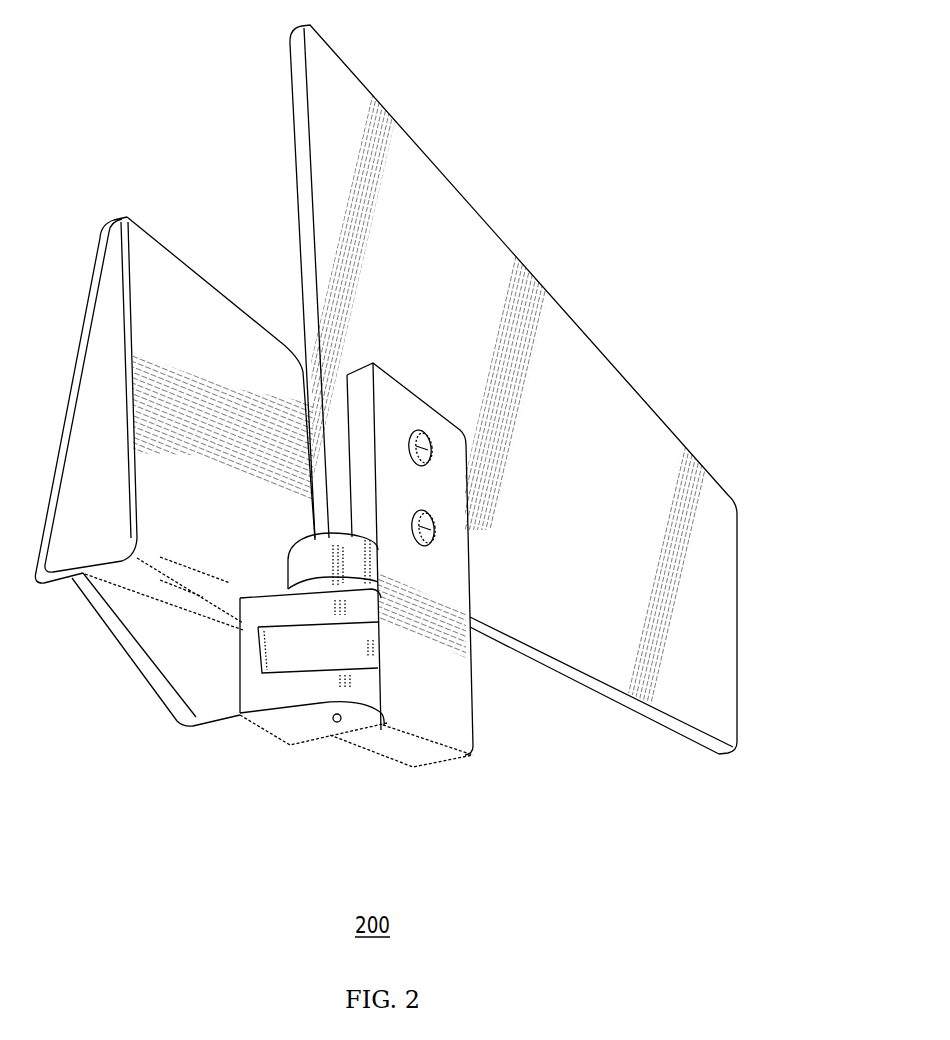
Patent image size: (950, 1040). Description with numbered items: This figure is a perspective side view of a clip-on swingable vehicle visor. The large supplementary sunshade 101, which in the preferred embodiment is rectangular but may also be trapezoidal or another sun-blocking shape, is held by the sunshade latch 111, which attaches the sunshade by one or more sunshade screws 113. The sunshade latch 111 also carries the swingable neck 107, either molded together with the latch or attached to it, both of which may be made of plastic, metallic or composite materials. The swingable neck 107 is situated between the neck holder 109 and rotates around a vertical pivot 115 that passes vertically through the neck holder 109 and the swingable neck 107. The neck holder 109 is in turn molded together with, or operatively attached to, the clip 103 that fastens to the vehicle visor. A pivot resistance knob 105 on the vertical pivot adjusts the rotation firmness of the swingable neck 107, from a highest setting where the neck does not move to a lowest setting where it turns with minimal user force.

The supplementary sunshade 101 is at (593, 628).
The clip 103 is at (160, 308).
The pivot resistance knob 105 is at (320, 550).
The swingable neck 107 is at (352, 647).
The neck holder 109 is at (302, 723).
The sunshade latch 111 is at (450, 695).
The sunshade screws 113 is at (430, 467).
The vertical pivot 115 is at (331, 726).